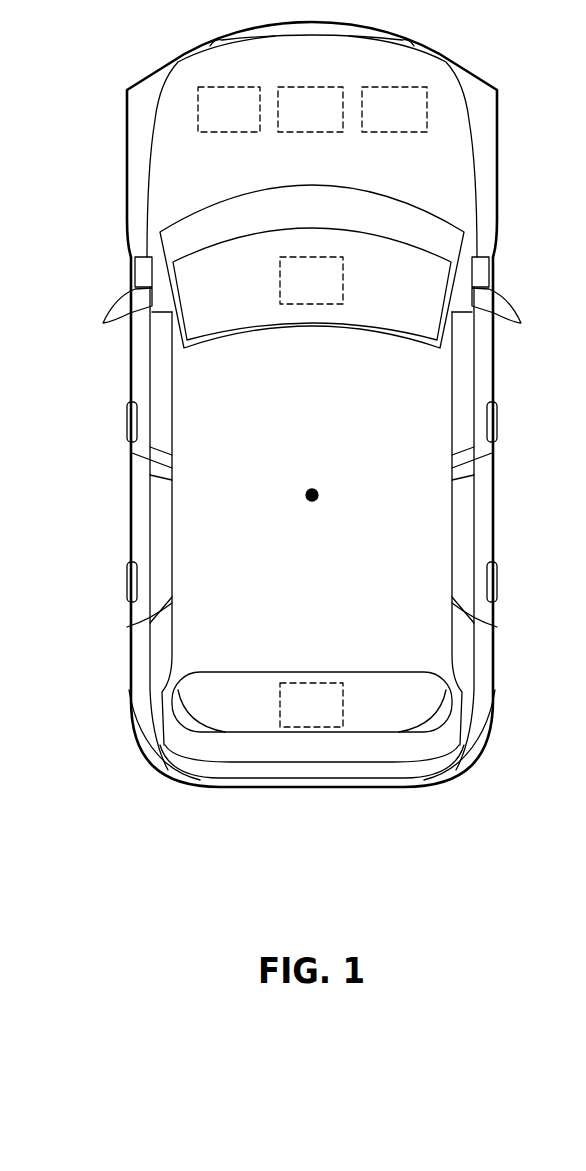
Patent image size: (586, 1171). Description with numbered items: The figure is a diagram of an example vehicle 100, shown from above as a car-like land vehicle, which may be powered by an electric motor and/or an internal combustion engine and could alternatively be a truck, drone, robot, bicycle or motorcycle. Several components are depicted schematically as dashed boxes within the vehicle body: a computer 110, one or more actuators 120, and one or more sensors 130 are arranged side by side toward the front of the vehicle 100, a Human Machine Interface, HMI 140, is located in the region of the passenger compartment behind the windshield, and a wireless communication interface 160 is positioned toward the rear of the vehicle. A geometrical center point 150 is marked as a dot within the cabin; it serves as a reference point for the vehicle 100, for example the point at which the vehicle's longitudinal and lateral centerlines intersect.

The vehicle 100 is at (320, 595).
The computer 110 is at (229, 109).
The actuator 120 is at (310, 109).
The sensor 130 is at (394, 109).
The Human Machine Interface 140 is at (311, 280).
The geometrical center point 150 is at (305, 498).
The wireless communication interface 160 is at (311, 705).